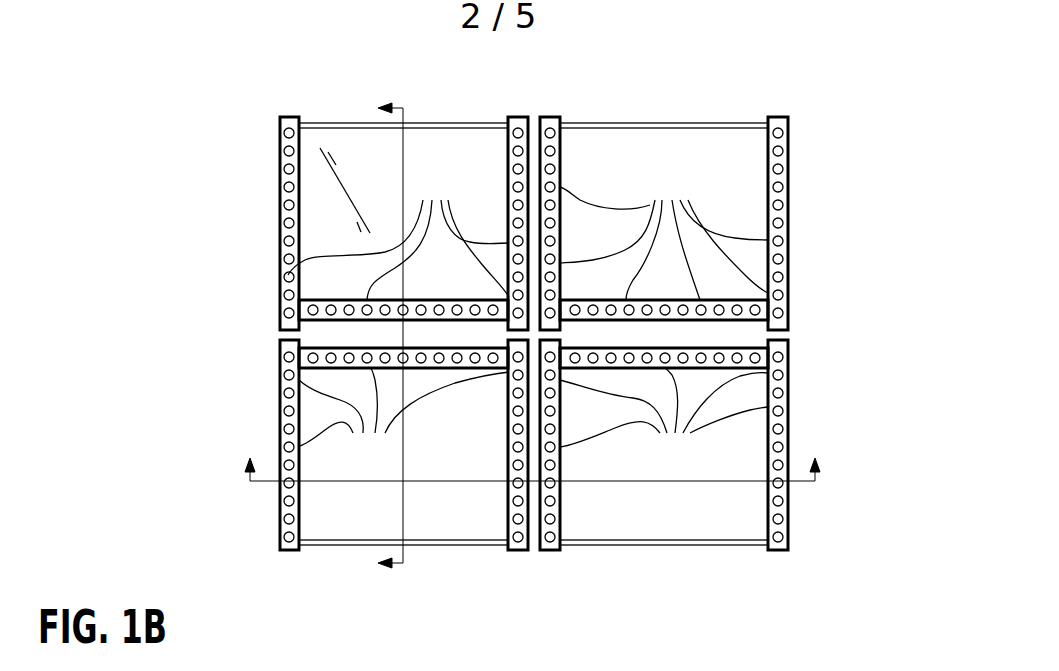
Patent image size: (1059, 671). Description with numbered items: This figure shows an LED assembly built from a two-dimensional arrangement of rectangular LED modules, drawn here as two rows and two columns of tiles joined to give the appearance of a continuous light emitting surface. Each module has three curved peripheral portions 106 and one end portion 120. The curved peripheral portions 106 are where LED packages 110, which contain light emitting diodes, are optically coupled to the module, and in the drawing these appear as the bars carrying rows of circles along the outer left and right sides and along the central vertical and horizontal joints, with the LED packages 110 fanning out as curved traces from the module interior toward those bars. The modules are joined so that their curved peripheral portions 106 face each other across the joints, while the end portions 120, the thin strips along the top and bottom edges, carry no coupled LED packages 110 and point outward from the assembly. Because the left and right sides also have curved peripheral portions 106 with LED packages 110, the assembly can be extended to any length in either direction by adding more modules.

The curved peripheral portion 106 is at (280, 192).
The LED package 110 is at (528, 318).
The end portion 120 is at (447, 128).